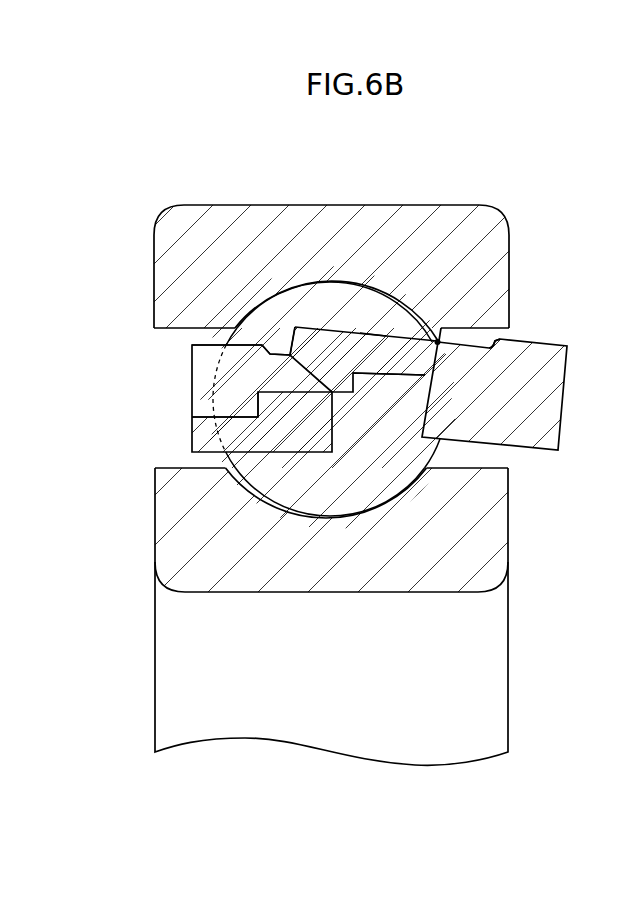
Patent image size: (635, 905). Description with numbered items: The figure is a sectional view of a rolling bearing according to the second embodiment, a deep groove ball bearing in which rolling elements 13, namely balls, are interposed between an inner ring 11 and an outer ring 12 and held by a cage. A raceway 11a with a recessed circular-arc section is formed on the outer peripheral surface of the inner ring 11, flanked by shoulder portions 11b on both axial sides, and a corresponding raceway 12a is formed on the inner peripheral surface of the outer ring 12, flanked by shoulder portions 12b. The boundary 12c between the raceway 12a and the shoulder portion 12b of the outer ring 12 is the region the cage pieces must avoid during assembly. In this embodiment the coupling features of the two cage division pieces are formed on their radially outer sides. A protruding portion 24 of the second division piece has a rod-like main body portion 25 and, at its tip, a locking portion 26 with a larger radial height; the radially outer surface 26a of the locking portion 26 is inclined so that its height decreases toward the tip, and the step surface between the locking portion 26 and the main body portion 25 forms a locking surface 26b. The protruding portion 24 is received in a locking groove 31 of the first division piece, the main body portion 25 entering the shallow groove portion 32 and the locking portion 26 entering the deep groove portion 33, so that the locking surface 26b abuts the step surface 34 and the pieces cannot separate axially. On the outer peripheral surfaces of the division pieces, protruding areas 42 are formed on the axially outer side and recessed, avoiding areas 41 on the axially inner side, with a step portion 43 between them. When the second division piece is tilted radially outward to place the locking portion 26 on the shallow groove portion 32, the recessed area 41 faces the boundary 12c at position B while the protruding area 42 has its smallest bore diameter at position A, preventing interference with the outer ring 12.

The inner ring 11 is at (331, 515).
The raceway 11a is at (326, 564).
The shoulder portions 11b is at (335, 484).
The outer ring 12 is at (331, 332).
The raceway 12a is at (337, 245).
The shoulder portions 12b is at (287, 296).
The boundary 12c is at (526, 374).
The rolling elements 13 is at (326, 470).
The protruding portion 24 is at (372, 242).
The main body portion 25 is at (389, 262).
The locking portion 26 is at (314, 300).
The radially outer surface 26a is at (262, 440).
The locking surface 26b is at (378, 413).
The locking groove 31 is at (221, 319).
The shallow groove portion 32 is at (276, 331).
The deep groove portion 33 is at (193, 418).
The step surface 34 is at (193, 392).
The recessed area 41 is at (366, 226).
The protruding area 42 is at (516, 378).
The step portion 43 is at (514, 282).
The position A is at (535, 296).
The position B is at (405, 412).